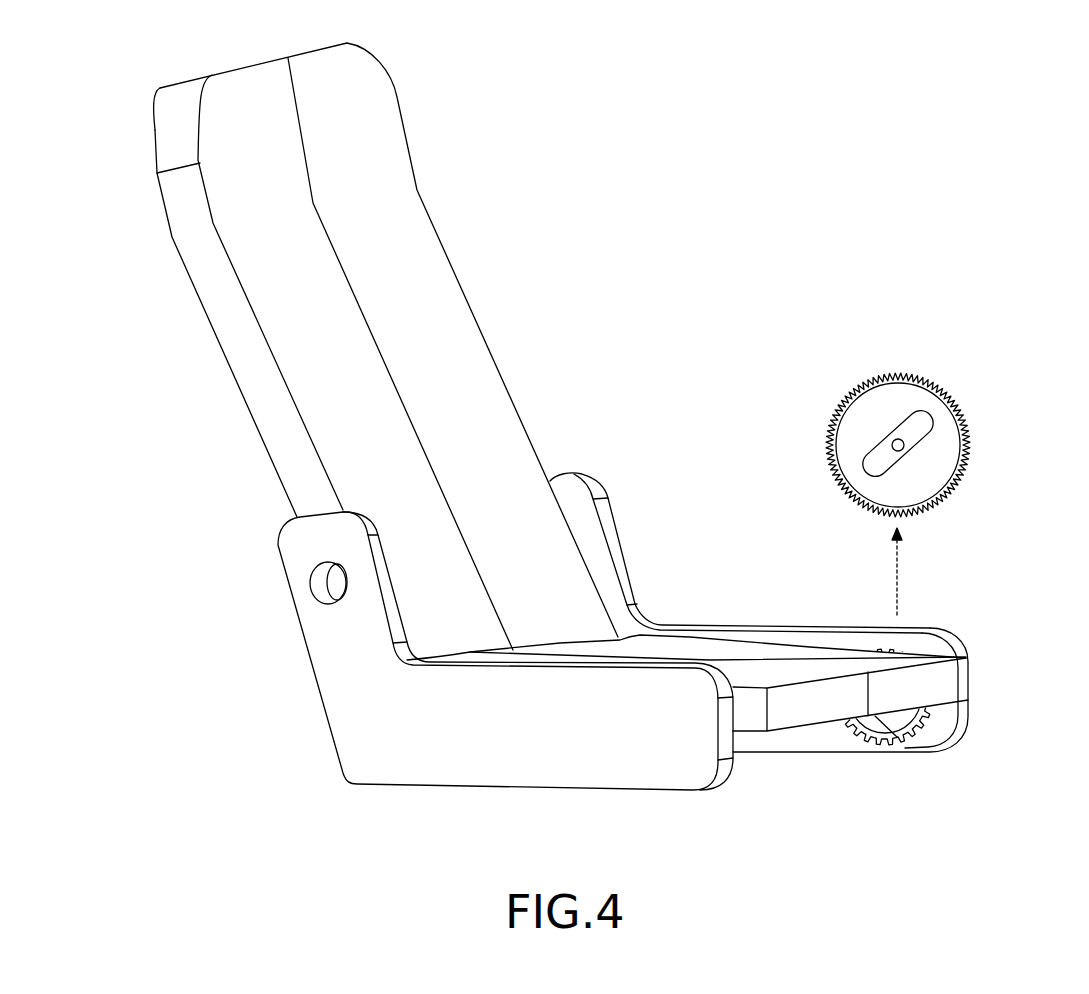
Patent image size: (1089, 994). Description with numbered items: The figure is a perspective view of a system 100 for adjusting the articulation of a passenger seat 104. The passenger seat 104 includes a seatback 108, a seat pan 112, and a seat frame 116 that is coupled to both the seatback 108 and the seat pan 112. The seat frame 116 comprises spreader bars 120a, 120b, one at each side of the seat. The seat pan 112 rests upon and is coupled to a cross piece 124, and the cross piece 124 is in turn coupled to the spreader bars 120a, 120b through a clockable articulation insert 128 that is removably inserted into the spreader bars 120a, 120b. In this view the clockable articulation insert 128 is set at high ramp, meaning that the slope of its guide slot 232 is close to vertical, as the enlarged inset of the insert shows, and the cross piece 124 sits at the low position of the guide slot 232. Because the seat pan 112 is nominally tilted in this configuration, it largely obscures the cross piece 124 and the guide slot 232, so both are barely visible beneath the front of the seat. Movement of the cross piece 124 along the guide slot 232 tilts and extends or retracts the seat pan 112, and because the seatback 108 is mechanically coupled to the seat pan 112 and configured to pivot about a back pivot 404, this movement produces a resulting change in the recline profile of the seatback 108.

The system 100 is at (700, 88).
The passenger seat 104 is at (576, 200).
The seatback 108 is at (205, 262).
The seat pan 112 is at (743, 652).
The seat frame 116 is at (966, 806).
The spreader bar 120a is at (327, 688).
The spreader bar 120b is at (592, 535).
The cross piece 124 is at (806, 742).
The clockable articulation insert 128 is at (900, 720).
The guide slot 232 is at (873, 740).
The back pivot 404 is at (322, 587).